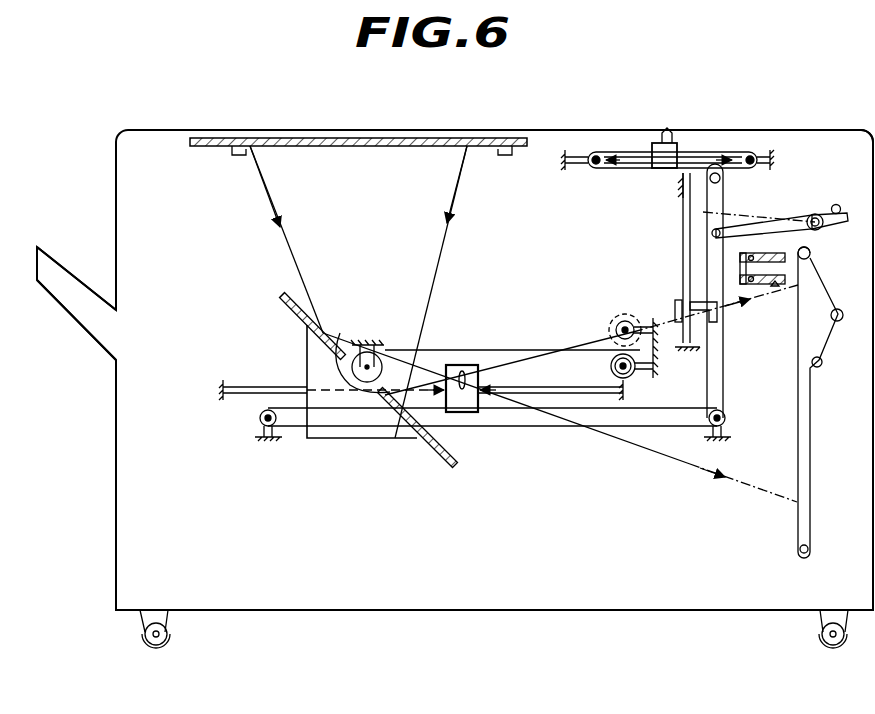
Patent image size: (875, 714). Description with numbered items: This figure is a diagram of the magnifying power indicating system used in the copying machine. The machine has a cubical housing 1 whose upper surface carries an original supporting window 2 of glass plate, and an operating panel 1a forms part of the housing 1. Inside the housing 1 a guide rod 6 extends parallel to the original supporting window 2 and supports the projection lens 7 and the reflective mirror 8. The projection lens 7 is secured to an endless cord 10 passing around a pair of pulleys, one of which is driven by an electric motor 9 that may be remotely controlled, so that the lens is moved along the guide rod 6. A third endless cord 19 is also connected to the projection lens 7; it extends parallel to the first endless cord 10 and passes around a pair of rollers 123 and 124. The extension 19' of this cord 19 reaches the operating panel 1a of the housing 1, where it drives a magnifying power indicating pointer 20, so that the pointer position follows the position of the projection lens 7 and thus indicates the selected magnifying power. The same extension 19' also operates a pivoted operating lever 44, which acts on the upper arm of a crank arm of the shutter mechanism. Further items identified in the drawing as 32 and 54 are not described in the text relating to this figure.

The housing 1 is at (115, 405).
The operating panel 1a is at (743, 124).
The original supporting window 2 is at (276, 138).
The guide rod 6 is at (256, 360).
The projection lens 7 is at (462, 368).
The reflective mirror 8 is at (283, 300).
The electric motor 9 is at (622, 320).
The endless cord 10 is at (491, 350).
The third endless cord 19 is at (492, 437).
The extension of the third endless cord 19' is at (720, 291).
The magnifying power indicating pointer 20 is at (668, 148).
The latch 32 is at (738, 262).
The pivoted operating lever 44 is at (808, 213).
The chute 54 is at (60, 293).
The roller 123 is at (262, 418).
The roller 124 is at (727, 417).